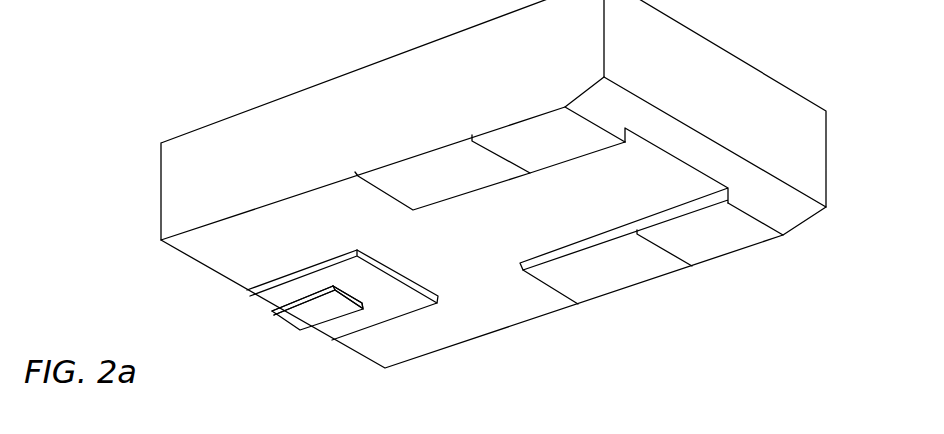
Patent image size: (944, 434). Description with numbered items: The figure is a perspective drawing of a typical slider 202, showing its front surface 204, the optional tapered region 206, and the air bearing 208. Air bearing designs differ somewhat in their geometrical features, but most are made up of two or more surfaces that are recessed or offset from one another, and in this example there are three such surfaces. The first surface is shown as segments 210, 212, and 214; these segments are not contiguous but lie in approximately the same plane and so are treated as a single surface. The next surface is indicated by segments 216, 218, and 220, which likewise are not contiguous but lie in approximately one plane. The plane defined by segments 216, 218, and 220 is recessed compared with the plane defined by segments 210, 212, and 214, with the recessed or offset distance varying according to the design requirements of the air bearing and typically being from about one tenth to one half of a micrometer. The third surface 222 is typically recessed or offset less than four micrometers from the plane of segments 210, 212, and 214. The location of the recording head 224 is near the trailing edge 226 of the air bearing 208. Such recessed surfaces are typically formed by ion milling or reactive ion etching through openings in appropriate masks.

The slider 202 is at (237, 81).
The front surface 204 is at (733, 83).
The optional tapered region 206 is at (793, 212).
The air bearing 208 is at (551, 360).
The segment of first surface 210 is at (730, 245).
The segment of first surface 212 is at (557, 148).
The segment of first surface 214 is at (325, 315).
The segment of recessed second surface 216 is at (627, 273).
The segment of recessed second surface 218 is at (458, 180).
The segment of recessed second surface 220 is at (364, 323).
The third surface 222 is at (470, 327).
The recording head 224 is at (303, 318).
The trailing edge 226 is at (253, 303).